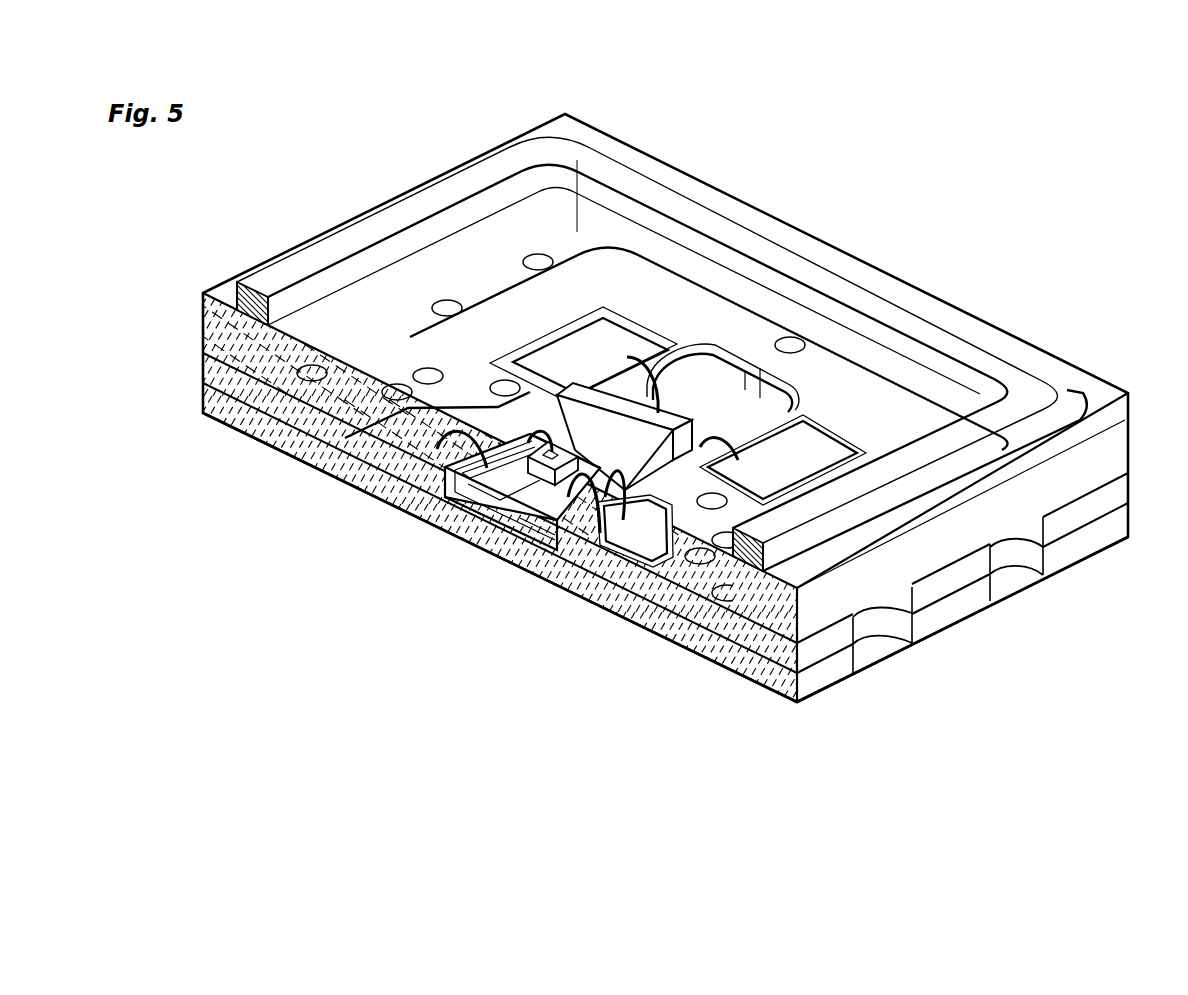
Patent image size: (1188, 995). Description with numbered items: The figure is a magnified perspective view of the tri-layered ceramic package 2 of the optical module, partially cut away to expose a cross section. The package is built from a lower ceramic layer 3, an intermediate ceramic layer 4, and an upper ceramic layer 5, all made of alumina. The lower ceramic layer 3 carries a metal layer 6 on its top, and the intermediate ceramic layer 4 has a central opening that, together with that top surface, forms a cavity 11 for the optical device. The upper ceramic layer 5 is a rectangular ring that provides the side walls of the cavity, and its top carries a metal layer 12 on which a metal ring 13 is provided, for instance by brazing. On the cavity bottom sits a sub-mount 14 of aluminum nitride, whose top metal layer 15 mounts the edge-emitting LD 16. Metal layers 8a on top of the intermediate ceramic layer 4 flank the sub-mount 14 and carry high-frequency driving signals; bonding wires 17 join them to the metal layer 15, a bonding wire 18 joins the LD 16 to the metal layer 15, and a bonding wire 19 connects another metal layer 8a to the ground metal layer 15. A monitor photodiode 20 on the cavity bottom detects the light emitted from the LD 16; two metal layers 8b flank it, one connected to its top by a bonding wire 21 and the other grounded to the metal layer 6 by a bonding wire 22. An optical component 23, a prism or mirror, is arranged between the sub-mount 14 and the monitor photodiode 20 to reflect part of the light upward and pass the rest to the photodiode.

The tri-layered ceramic package 2 is at (892, 208).
The lower ceramic layer 3 is at (943, 608).
The intermediate ceramic layer 4 is at (943, 578).
The upper ceramic layer 5 is at (983, 520).
The metal layer 6 is at (757, 400).
The metal layer 8a is at (414, 445).
The metal layer 8b is at (580, 347).
The cavity 11 is at (757, 400).
The metal layer 12 is at (1128, 393).
The metal ring 13 is at (463, 196).
The sub-mount 14 is at (492, 510).
The metal layer 15 is at (477, 466).
The LD 16 is at (540, 500).
The bonding wires 17 is at (497, 422).
The bonding wire 18 is at (540, 443).
The bonding wire 19 is at (583, 495).
The monitor photodiode 20 is at (713, 400).
The bonding wire 21 is at (657, 410).
The bonding wire 22 is at (741, 450).
The optical component 23 is at (655, 462).